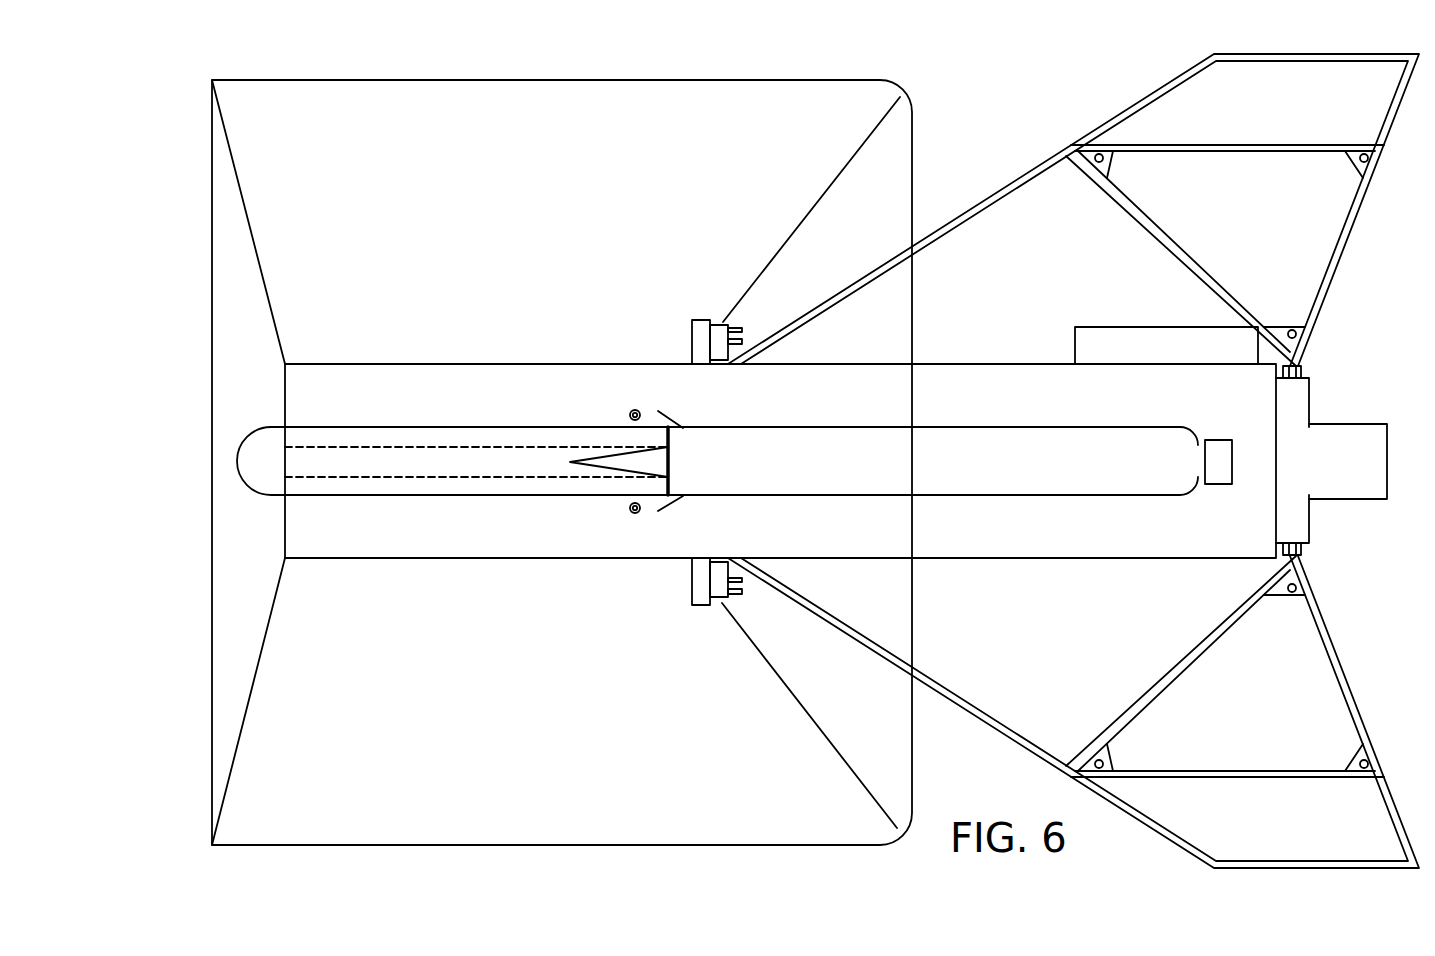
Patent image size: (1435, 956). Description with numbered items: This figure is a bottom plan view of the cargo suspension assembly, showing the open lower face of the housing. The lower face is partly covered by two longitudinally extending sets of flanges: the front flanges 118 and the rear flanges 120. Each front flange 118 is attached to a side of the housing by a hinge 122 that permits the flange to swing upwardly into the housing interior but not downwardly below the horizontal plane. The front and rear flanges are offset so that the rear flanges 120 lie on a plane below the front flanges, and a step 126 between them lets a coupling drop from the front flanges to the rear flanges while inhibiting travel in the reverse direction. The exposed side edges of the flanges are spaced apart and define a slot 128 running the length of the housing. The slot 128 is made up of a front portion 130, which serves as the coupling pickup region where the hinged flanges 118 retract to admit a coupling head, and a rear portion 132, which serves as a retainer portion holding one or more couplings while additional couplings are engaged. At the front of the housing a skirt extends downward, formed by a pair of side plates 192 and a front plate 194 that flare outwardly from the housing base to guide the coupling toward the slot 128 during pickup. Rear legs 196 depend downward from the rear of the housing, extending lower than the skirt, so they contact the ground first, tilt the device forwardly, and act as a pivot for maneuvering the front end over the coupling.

The front flanges 118 is at (378, 440).
The rear flanges 120 is at (962, 440).
The hinge 122 is at (490, 429).
The step 126 is at (607, 464).
The slot 128 is at (535, 466).
The front portion 130 is at (490, 541).
The rear portion 132 is at (1130, 541).
The side plates 192 is at (828, 140).
The front plate 194 is at (225, 573).
The rear legs 196 is at (1322, 302).